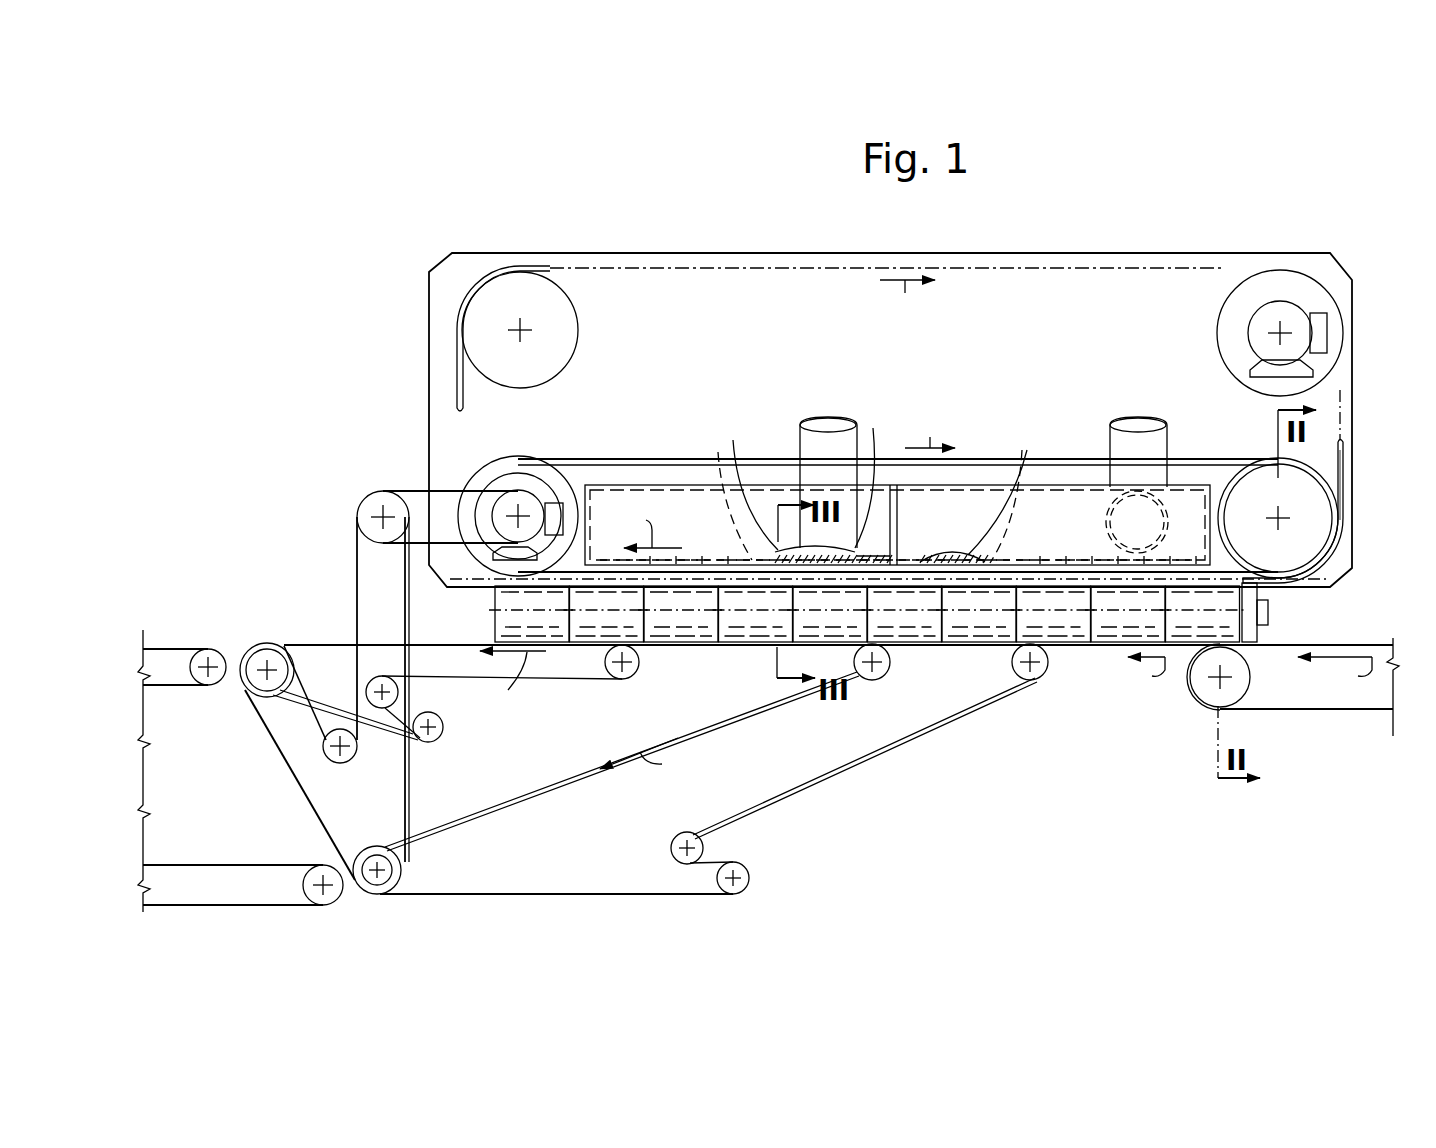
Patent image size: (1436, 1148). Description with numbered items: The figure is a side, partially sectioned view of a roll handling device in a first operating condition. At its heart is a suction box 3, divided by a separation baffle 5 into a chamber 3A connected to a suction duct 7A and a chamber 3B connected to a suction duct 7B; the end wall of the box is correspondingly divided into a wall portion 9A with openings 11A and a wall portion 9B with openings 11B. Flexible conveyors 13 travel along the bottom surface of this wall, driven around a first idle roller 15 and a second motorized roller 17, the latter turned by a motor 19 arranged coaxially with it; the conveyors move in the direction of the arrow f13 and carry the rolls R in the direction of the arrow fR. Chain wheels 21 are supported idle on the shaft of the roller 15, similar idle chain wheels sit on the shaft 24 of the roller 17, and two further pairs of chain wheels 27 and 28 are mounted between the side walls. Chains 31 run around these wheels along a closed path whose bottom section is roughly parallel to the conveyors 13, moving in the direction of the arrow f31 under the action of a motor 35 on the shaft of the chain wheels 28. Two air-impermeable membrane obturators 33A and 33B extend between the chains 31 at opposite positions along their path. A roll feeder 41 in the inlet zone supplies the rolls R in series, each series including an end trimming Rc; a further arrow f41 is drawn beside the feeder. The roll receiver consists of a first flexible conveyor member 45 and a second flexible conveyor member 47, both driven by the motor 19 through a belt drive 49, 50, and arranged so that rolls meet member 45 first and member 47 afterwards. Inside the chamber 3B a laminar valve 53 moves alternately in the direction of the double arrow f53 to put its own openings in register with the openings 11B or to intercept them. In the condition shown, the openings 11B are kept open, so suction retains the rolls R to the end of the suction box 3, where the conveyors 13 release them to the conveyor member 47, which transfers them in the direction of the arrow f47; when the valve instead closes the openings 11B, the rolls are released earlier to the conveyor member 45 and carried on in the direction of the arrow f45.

The suction box 3 is at (663, 483).
The chamber 3A is at (688, 520).
The chamber 3B is at (1105, 522).
The separation baffle 5 is at (905, 535).
The suction duct 7A is at (815, 440).
The suction duct 7B is at (1130, 432).
The wall portion 9A is at (930, 548).
The wall portion 9B is at (873, 428).
The openings 11A is at (1026, 446).
The openings 11B is at (722, 452).
The flexible conveyors 13 is at (1065, 462).
The first idle roller 15 is at (1257, 497).
The second motorized roller 17 is at (545, 487).
The motor 19 is at (510, 485).
The chain wheels 21 is at (1330, 445).
The shaft 24 is at (525, 512).
The chain wheels 27 is at (578, 331).
The chain wheels 28 is at (1230, 330).
The chains 31 is at (800, 268).
The membrane obturator 33A is at (457, 347).
The membrane obturator 33B is at (1348, 470).
The motor 35 is at (1282, 308).
The roll feeder 41 is at (1358, 640).
The first flexible conveyor member 45 is at (808, 775).
The second flexible conveyor member 47 is at (616, 676).
The belt drive 49 is at (385, 492).
The belt drive 50 is at (407, 630).
The laminar valve 53 is at (840, 560).
The rolls R is at (742, 643).
The end trimming Rc is at (1262, 631).
The arrow f31 is at (906, 306).
The arrow f13 is at (930, 432).
The double arrow f53 is at (645, 525).
The arrow f47 is at (513, 686).
The arrow fR is at (1146, 680).
The direction arrow f41 is at (1335, 680).
The arrow f45 is at (639, 764).